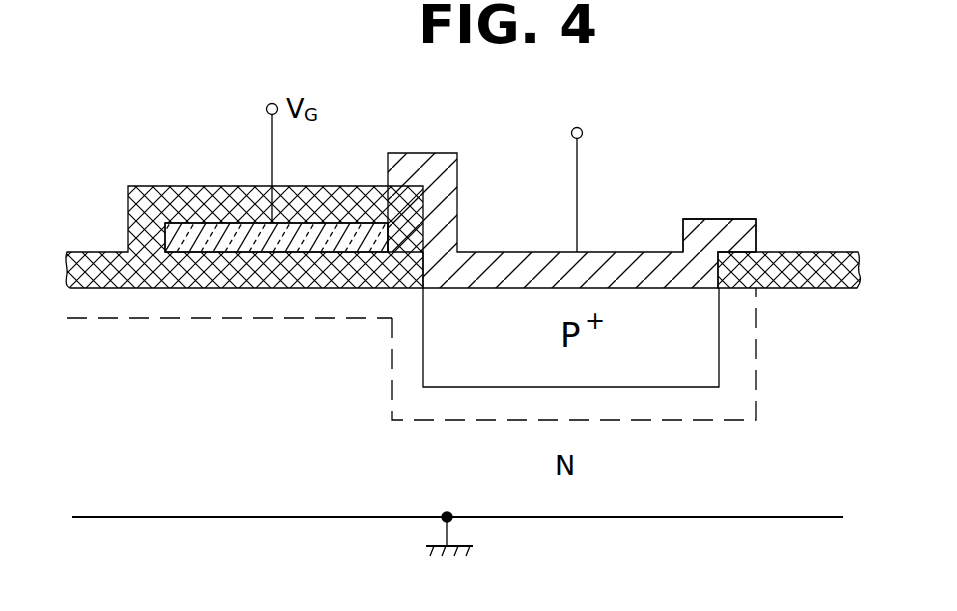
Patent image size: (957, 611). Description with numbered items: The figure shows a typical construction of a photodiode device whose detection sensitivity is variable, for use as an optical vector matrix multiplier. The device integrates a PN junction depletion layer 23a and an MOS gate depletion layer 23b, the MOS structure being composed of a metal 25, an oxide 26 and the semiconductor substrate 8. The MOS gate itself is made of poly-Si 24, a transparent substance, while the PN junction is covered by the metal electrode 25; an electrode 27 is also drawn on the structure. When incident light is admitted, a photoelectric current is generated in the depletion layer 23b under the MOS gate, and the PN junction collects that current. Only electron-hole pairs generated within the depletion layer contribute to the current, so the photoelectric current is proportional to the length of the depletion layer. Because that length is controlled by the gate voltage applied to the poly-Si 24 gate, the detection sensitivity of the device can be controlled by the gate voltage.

The semiconductor substrate 8 is at (815, 494).
The PN junction depletion layer 23a is at (738, 396).
The MOS gate depletion layer 23b is at (262, 308).
The poly-Si 24 is at (163, 231).
The metal 25 is at (712, 221).
The oxide 26 is at (813, 249).
The electrode 27 is at (583, 131).